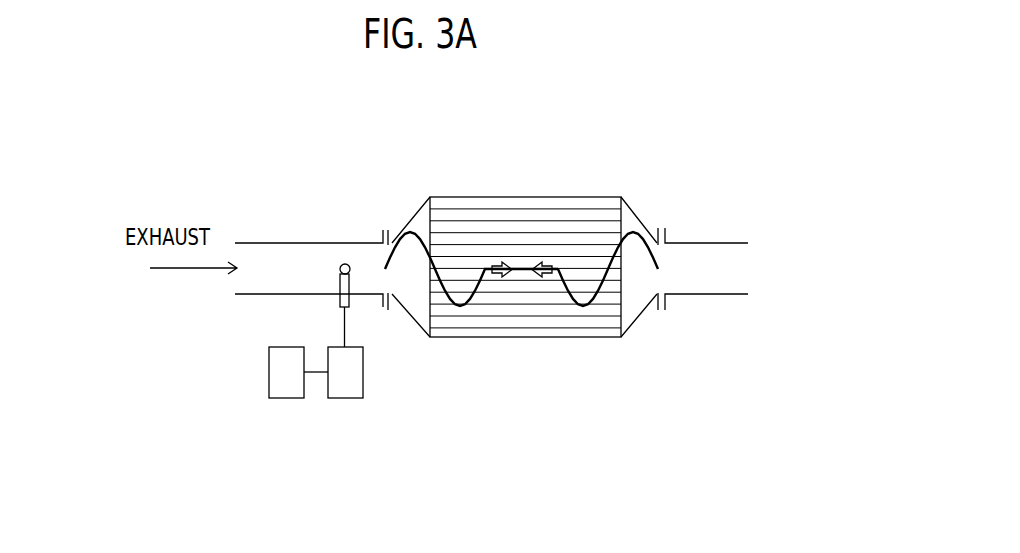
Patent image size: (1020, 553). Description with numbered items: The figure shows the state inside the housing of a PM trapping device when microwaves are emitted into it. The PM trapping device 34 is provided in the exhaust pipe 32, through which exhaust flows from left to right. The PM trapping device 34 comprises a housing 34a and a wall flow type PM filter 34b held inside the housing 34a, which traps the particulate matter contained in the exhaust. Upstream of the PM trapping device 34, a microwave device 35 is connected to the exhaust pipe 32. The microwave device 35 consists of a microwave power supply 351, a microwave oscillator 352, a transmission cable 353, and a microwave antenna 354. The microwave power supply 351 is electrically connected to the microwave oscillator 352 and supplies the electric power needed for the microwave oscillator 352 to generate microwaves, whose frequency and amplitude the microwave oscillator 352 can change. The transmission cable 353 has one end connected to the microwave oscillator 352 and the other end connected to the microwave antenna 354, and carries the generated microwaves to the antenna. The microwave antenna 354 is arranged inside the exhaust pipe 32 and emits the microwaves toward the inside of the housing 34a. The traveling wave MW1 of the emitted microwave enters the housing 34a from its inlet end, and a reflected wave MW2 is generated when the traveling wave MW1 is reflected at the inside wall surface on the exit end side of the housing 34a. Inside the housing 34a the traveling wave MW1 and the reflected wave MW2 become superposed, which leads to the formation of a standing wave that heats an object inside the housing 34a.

The exhaust pipe 32 is at (279, 243).
The PM trapping device 34 is at (524, 271).
The housing 34a is at (638, 228).
The PM filter 34b is at (517, 323).
The traveling wave MW1 is at (424, 236).
The reflected wave MW2 is at (657, 238).
The microwave device 35 is at (325, 377).
The microwave power supply 351 is at (269, 385).
The microwave oscillator 352 is at (363, 385).
The transmission cable 353 is at (346, 329).
The microwave antenna 354 is at (340, 298).